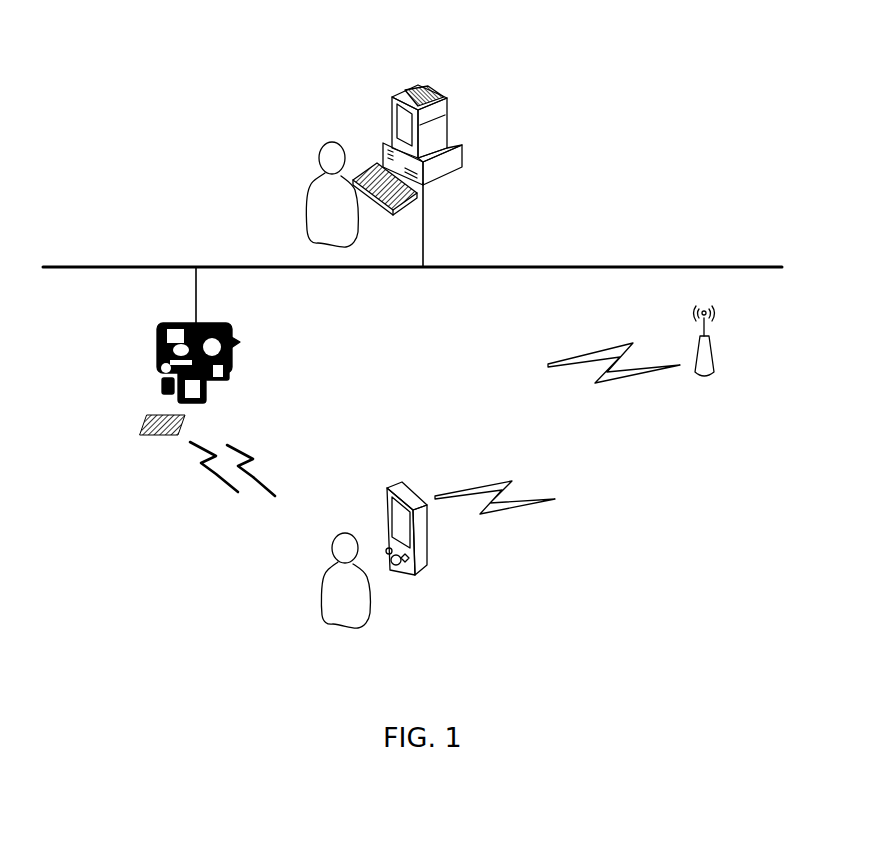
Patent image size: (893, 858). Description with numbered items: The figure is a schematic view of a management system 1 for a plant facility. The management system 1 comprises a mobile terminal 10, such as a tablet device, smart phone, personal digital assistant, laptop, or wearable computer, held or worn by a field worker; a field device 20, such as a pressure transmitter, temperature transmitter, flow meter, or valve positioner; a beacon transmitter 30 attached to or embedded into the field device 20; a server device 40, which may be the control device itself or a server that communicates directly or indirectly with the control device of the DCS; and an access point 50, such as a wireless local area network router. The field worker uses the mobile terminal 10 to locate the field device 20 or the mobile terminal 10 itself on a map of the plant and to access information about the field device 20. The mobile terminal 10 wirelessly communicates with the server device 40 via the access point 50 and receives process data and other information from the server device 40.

The management system 1 is at (94, 29).
The mobile terminal 10 is at (428, 556).
The field device 20 is at (240, 340).
The beacon transmitter 30 is at (140, 430).
The server device 40 is at (442, 103).
The access point 50 is at (715, 352).